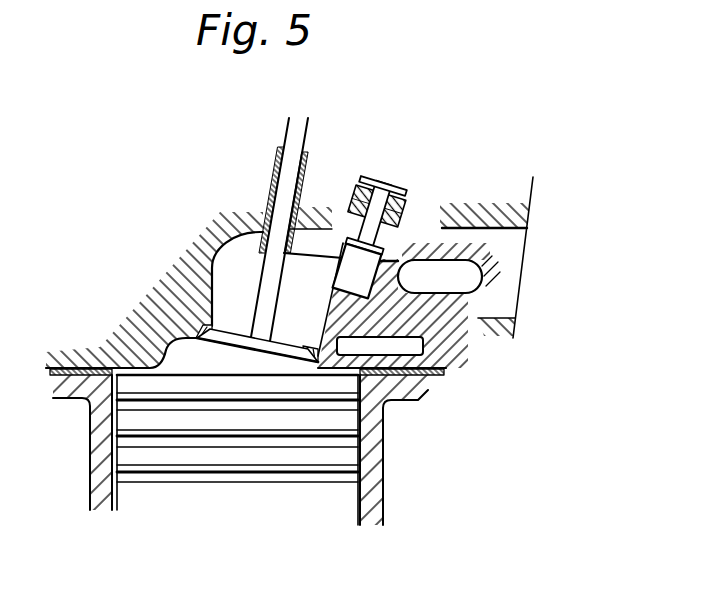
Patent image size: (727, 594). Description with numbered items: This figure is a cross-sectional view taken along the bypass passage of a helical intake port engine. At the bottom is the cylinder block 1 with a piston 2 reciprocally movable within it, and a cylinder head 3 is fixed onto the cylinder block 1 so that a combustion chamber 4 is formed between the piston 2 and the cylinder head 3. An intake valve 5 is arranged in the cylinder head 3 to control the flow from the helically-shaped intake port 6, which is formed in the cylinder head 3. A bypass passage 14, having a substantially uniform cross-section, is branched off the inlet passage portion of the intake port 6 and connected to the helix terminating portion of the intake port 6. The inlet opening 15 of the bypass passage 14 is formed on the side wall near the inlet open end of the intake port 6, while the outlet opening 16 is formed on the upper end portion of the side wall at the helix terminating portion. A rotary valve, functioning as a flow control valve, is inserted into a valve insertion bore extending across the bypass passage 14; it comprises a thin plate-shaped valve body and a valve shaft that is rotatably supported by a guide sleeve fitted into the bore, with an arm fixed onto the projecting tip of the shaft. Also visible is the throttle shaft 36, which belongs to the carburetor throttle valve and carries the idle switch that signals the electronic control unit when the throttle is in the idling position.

The cylinder block 1 is at (98, 455).
The piston 2 is at (160, 492).
The cylinder head 3 is at (150, 350).
The combustion chamber 4 is at (190, 365).
The intake valve 5 is at (267, 288).
The helically-shaped intake port 6 is at (477, 232).
The bypass passage 14 is at (403, 255).
The inlet opening 15 is at (460, 285).
The outlet opening 16 is at (320, 266).
The throttle shaft 36 is at (412, 349).